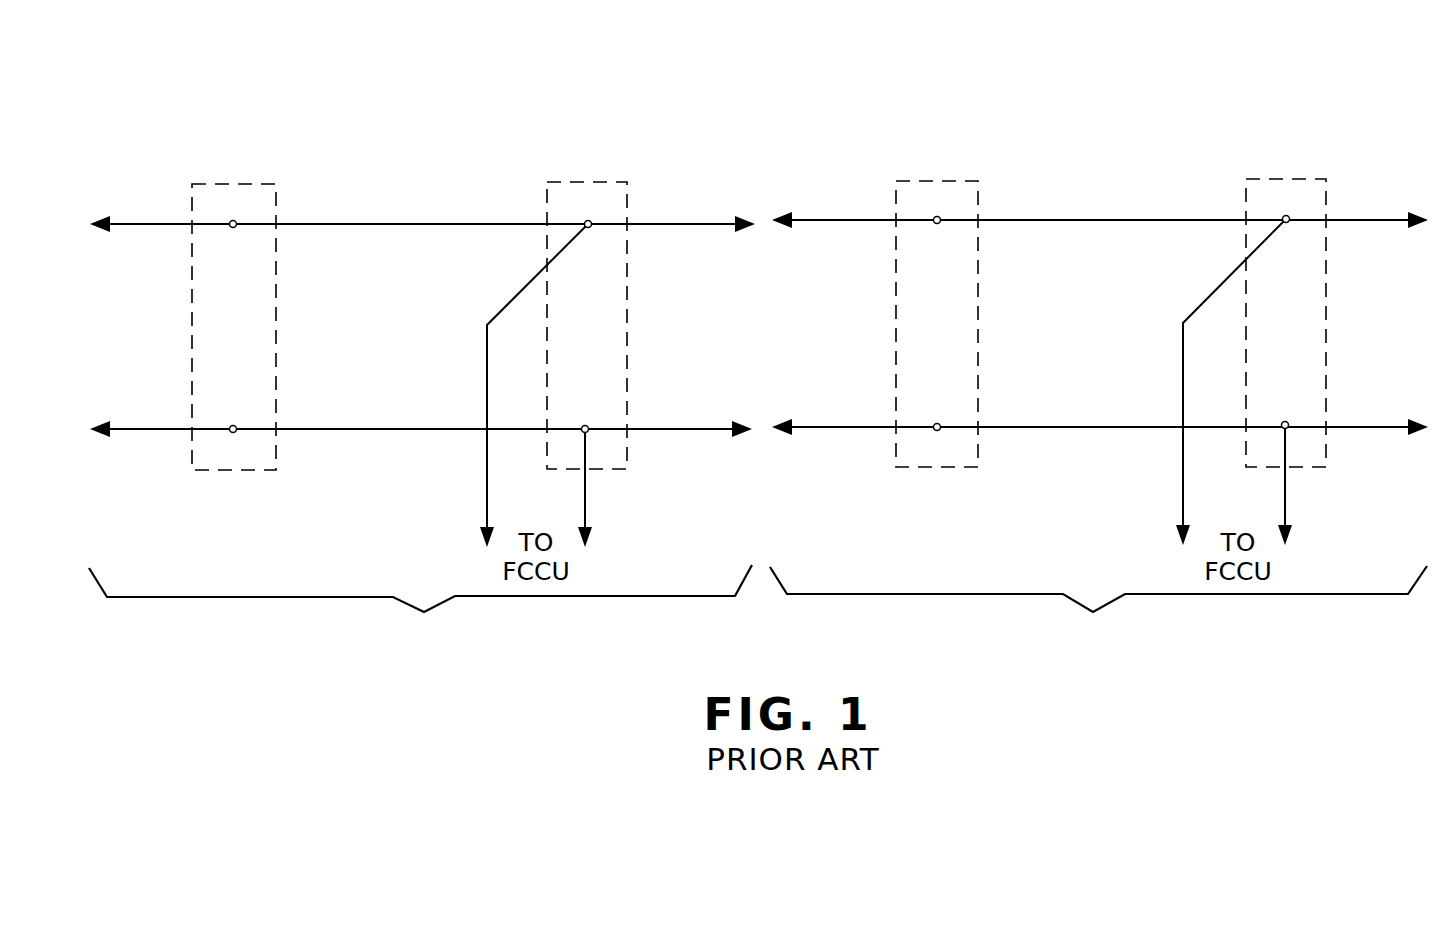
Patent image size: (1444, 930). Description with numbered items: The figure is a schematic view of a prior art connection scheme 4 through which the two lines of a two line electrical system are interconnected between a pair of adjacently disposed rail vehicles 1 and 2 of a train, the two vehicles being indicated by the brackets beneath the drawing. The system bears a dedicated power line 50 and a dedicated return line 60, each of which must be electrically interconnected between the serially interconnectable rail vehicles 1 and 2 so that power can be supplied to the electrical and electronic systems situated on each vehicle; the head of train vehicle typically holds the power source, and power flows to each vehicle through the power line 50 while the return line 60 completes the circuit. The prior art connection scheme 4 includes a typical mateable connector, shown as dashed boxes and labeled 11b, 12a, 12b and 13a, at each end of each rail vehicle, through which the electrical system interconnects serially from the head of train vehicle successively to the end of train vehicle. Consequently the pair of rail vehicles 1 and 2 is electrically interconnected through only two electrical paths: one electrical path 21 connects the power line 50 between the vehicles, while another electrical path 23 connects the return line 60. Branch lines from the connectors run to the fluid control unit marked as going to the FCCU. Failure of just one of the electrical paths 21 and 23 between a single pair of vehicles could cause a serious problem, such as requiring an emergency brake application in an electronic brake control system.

The rail vehicle 1 is at (1098, 612).
The rail vehicle 2 is at (420, 612).
The prior art connection scheme 4 is at (697, 143).
The mateable connector 11b is at (1297, 178).
The mateable connector 12a is at (950, 181).
The mateable connector 12b is at (597, 182).
The mateable connector 13a is at (247, 182).
The electrical path 21 is at (837, 220).
The electrical path 23 is at (831, 428).
The power line 50 is at (1110, 220).
The return line 60 is at (1096, 428).